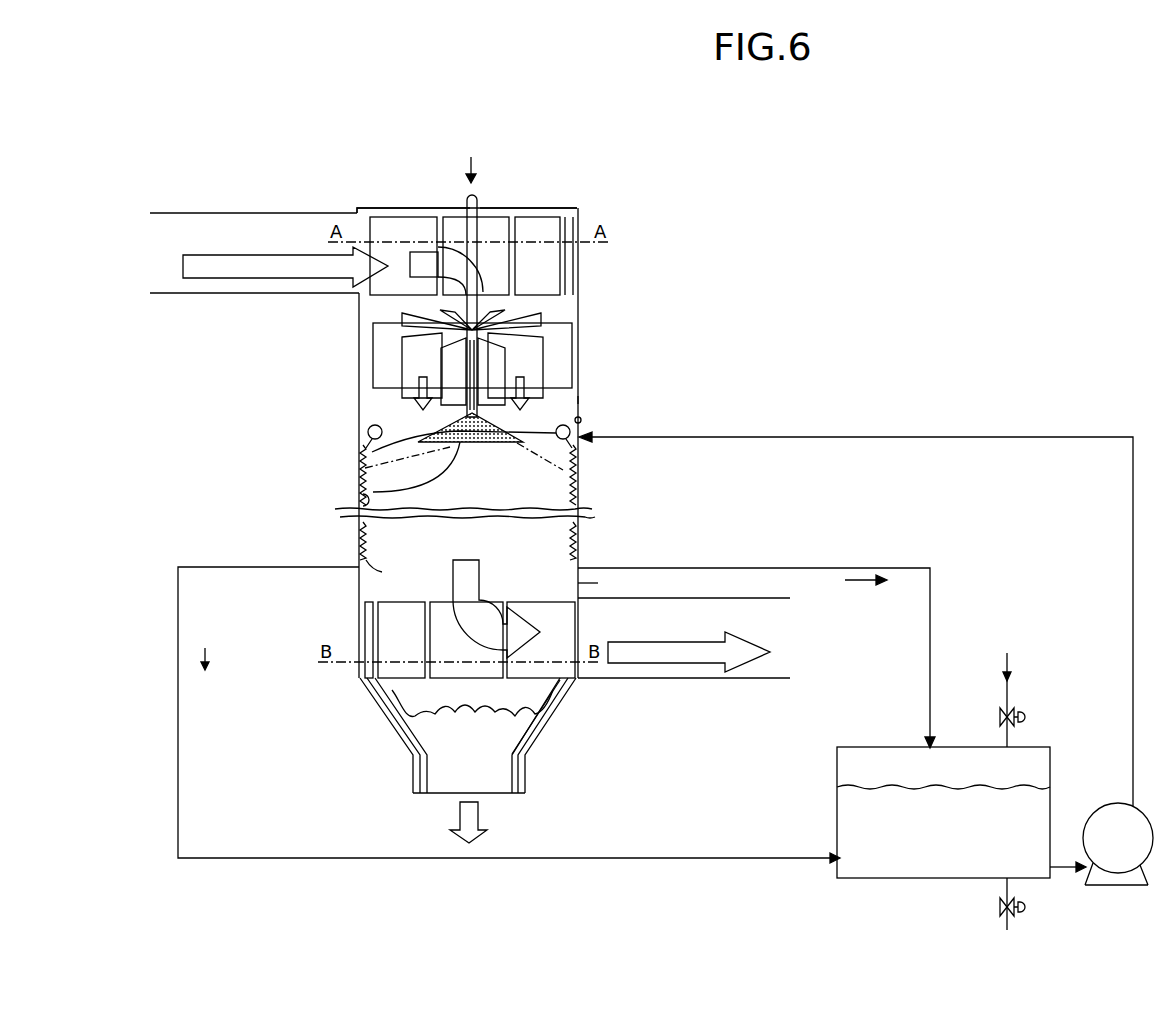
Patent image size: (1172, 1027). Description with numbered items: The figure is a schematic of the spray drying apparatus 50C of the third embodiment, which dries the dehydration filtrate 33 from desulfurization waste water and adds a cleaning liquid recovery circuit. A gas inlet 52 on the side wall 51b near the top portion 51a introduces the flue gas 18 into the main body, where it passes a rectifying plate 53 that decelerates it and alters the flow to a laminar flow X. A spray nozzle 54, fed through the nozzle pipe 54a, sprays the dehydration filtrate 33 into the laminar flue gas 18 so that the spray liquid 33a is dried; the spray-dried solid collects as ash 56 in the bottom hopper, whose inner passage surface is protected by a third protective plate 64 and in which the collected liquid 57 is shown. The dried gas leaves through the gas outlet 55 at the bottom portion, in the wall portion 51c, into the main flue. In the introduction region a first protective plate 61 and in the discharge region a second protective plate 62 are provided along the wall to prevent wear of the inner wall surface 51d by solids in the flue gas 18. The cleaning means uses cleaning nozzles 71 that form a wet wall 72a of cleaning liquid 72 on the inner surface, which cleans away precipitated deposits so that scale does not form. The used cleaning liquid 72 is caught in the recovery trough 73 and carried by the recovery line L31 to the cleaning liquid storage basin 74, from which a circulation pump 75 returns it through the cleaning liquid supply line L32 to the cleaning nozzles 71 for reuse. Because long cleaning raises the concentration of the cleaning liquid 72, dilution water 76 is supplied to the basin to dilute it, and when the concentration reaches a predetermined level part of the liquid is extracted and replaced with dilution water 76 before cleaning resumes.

The spray drying apparatus 50C is at (427, 153).
The gas inlet 52 is at (243, 213).
The flue gas 18 is at (253, 270).
The top portion 51a is at (380, 208).
The nozzle pipe 54a is at (466, 205).
The dehydration filtrate 33 is at (477, 167).
The first protective plate 61 is at (552, 212).
The side wall 51b is at (359, 360).
The inner wall surface 51d is at (581, 422).
The rectifying plate 53 is at (560, 358).
The spray nozzle 54 is at (520, 413).
The laminar flow X is at (578, 400).
The cleaning nozzle 71 is at (368, 436).
The spray liquid 33a is at (373, 492).
The wet wall 72a is at (340, 517).
The recovery trough 73 is at (372, 575).
The lower wall of casing 51c is at (598, 582).
The second protective plate 62 is at (368, 625).
The gas outlet 55 is at (752, 598).
The ash 56 is at (415, 755).
The third protective plate 64 is at (525, 757).
The collected liquid 57 is at (560, 712).
The recovery line L31 is at (660, 858).
The cleaning liquid supply line L32 is at (875, 437).
The cleaning liquid 72 is at (890, 882).
The cleaning liquid storage basin 74 is at (837, 787).
The circulation pump 75 is at (1132, 814).
The dilution water 76 is at (1012, 668).